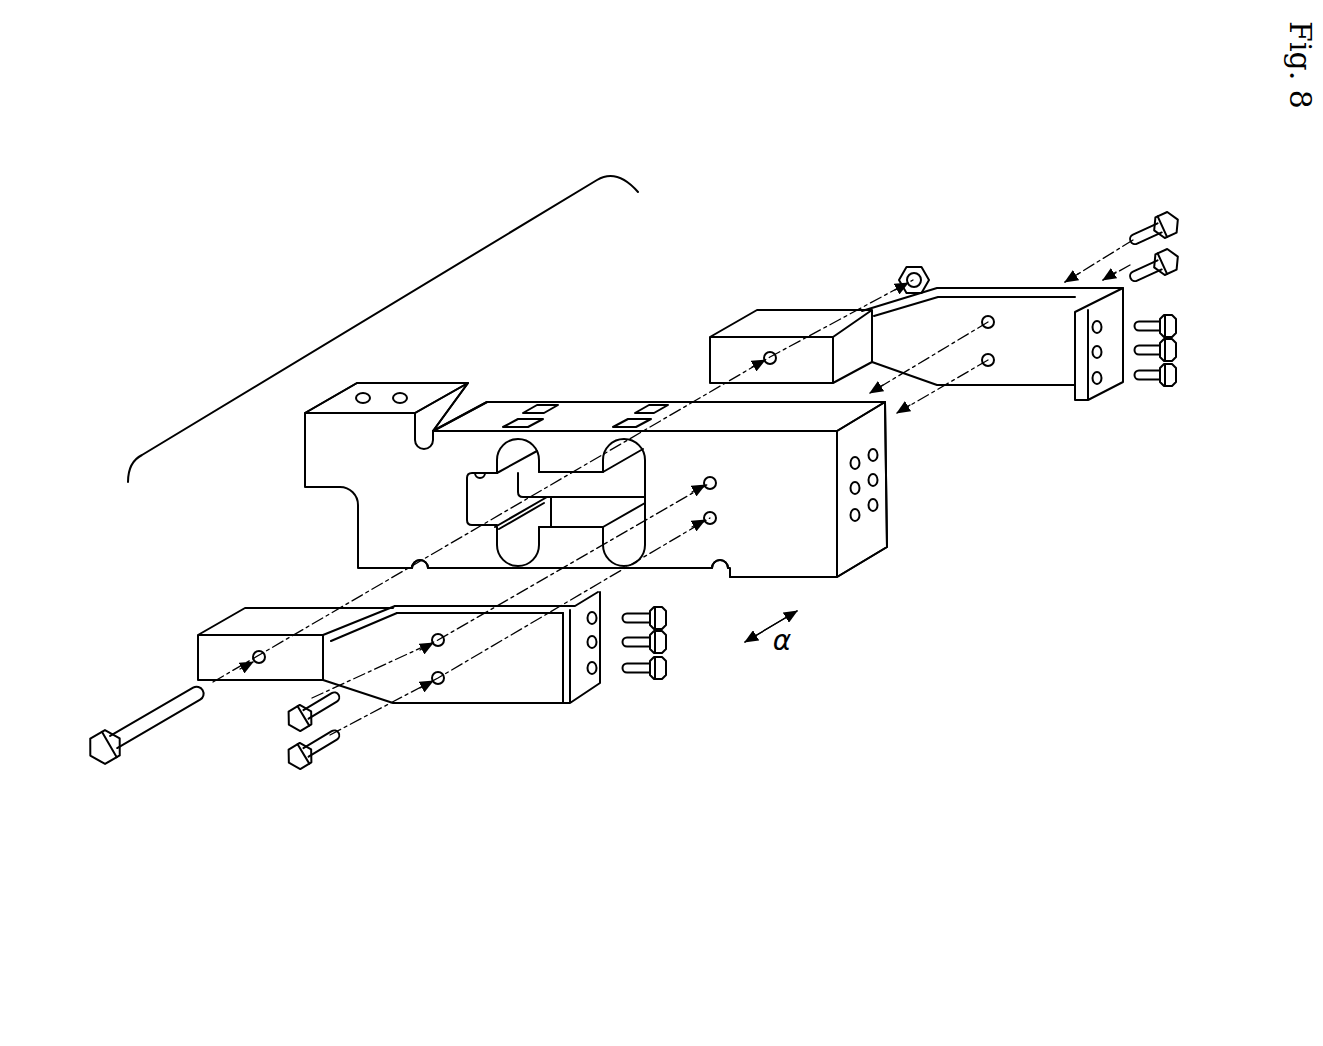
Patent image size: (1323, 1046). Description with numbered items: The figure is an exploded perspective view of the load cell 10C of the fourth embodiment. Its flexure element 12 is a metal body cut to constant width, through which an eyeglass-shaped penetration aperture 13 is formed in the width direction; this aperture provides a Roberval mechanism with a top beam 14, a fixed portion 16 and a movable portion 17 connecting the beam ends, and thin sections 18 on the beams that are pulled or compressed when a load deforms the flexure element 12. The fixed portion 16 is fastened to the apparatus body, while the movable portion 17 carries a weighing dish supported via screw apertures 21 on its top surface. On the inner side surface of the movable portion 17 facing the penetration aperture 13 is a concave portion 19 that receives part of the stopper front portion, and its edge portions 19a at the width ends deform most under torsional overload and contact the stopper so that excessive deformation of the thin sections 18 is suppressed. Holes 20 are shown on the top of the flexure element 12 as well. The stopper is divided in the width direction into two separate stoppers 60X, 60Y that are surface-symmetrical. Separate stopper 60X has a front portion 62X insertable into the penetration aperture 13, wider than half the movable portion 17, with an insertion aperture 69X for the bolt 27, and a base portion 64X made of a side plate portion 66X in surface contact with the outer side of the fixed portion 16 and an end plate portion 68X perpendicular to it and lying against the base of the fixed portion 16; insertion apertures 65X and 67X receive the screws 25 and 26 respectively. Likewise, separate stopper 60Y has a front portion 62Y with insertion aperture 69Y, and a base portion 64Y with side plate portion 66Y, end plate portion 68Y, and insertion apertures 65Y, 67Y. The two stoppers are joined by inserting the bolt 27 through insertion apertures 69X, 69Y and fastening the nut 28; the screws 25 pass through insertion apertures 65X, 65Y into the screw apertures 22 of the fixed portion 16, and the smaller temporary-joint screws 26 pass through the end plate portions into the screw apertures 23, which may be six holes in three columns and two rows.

The load cell 10C is at (378, 297).
The flexure element 12 is at (290, 458).
The penetration aperture 13 is at (618, 485).
The top beam 14 is at (580, 453).
The fixed portion 16 is at (787, 512).
The movable portion 17 is at (410, 477).
The thin sections 18 is at (513, 431).
The concave portion 19 is at (477, 505).
The edge portion 19a is at (477, 470).
The groove 20 is at (545, 408).
The screw apertures 21 is at (405, 397).
The screw apertures 22 is at (718, 572).
The screw apertures 23 is at (877, 506).
The screws 25 is at (290, 753).
The screws 26 is at (666, 672).
The bolt 27 is at (147, 712).
The nut 28 is at (913, 268).
The separate stopper 60X is at (450, 647).
The separate stopper 60Y is at (927, 354).
The front portion 62X is at (293, 615).
The front portion 62Y is at (817, 322).
The base portion 64X is at (524, 669).
The base portion 64Y is at (1014, 386).
The insertion aperture 65X is at (438, 684).
The insertion aperture 65Y is at (988, 367).
The side plate portion 66X is at (520, 695).
The side plate portion 66Y is at (1033, 360).
The insertion aperture 67X is at (600, 642).
The insertion aperture 67Y is at (1102, 357).
The end plate portion 68X is at (575, 687).
The end plate portion 68Y is at (1097, 392).
The insertion aperture 69X is at (253, 655).
The insertion aperture 69Y is at (764, 356).